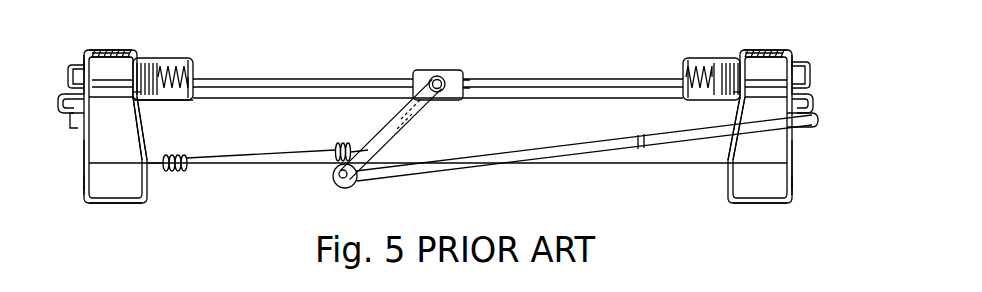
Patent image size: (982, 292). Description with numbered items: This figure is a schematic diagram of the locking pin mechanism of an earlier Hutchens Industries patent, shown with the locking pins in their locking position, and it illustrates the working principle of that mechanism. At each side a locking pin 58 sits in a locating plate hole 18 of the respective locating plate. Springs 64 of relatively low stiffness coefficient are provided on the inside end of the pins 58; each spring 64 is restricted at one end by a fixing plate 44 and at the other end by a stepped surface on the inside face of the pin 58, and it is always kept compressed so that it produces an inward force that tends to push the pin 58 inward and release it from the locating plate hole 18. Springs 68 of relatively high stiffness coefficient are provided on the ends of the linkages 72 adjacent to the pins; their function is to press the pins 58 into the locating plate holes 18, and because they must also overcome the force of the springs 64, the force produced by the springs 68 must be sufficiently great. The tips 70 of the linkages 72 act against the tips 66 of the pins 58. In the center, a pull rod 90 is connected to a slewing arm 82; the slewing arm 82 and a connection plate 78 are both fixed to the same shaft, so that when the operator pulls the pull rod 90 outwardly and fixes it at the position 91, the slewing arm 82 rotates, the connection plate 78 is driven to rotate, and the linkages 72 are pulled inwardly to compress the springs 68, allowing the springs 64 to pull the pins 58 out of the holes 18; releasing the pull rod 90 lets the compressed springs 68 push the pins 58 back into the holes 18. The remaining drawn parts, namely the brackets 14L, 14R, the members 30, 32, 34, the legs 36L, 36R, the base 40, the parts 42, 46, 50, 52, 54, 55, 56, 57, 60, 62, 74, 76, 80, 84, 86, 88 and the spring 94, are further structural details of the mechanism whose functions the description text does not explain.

The left bracket 14L is at (85, 49).
The right bracket 14R is at (800, 50).
The locating plate holes 18 is at (72, 66).
The upper flange 30 is at (83, 57).
The top wall 32 is at (128, 52).
The lower flange 34 is at (74, 114).
The left mounting leg 36L is at (83, 183).
The right mounting leg 36R is at (796, 183).
The base plate 40 is at (665, 164).
The top plate 42 is at (110, 52).
The fixing plate 44 is at (151, 62).
The side wall 46 is at (84, 152).
The bottom wall 50 is at (148, 190).
The inclined arm 52 is at (148, 135).
The hook 54 is at (62, 101).
The liner 55 is at (100, 54).
The inner layer 56 is at (120, 53).
The prior art latch assembly 57 is at (337, 47).
The locking pins 58 is at (117, 86).
The spring assembly 60 is at (198, 66).
The washer 62 is at (140, 61).
The springs of low stiffness coefficient 64 is at (137, 97).
The tips of the pins 66 is at (165, 66).
The springs of high stiffness coefficient 68 is at (175, 90).
The tips of the linkages 70 is at (193, 63).
The linkages 72 is at (340, 79).
The lower rod 74 is at (190, 99).
The clip 76 is at (69, 76).
The connection plate 78 is at (443, 69).
The pivot pin 80 is at (445, 93).
The slewing arm 82 is at (388, 122).
The spring housing 84 is at (195, 90).
The pivot housing 86 is at (420, 73).
The housing extension 88 is at (461, 72).
The pull rod 90 is at (503, 158).
The position 91 is at (640, 136).
The return spring 94 is at (186, 170).